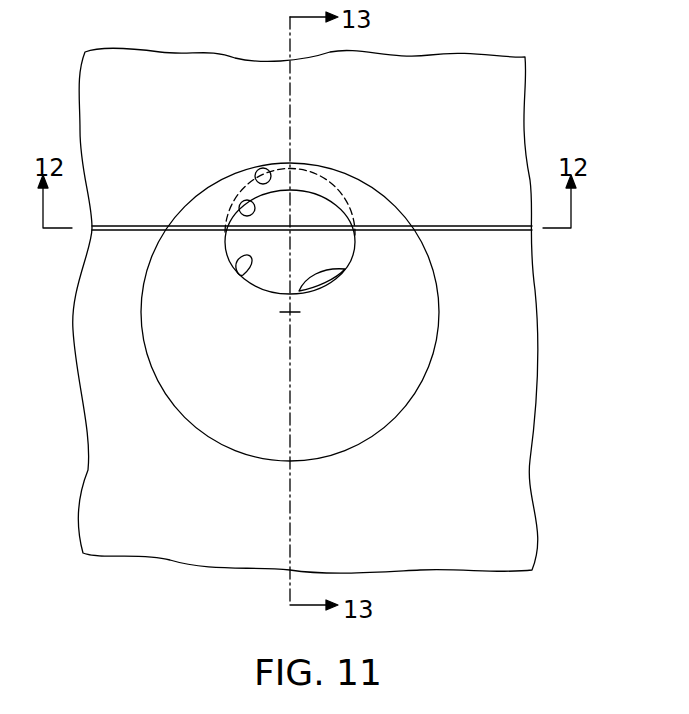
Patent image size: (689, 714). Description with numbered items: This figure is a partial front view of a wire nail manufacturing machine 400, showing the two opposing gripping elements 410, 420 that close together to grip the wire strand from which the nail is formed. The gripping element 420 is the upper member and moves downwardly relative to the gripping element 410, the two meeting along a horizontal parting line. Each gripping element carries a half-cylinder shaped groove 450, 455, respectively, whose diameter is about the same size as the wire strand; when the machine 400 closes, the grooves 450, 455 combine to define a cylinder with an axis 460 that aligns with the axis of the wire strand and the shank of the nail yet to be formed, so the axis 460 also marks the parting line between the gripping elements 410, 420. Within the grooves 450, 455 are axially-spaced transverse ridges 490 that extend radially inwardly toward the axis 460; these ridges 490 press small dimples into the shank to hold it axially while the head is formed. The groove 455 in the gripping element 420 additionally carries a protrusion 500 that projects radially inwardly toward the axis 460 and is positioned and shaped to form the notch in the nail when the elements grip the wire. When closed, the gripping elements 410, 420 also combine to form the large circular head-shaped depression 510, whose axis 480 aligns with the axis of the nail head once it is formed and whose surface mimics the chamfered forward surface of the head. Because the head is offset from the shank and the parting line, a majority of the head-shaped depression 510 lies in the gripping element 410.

The nail manufacturing machine 400 is at (163, 592).
The gripping element 410 is at (435, 540).
The gripping element 420 is at (411, 75).
The half-cylinder shaped groove 450 is at (243, 275).
The half-cylinder shaped groove 455 is at (254, 172).
The axis 460 is at (290, 228).
The axis 480 is at (292, 315).
The transverse ridges 490 is at (345, 269).
The protrusion 500 is at (238, 212).
The head-shaped depression 510 is at (213, 395).